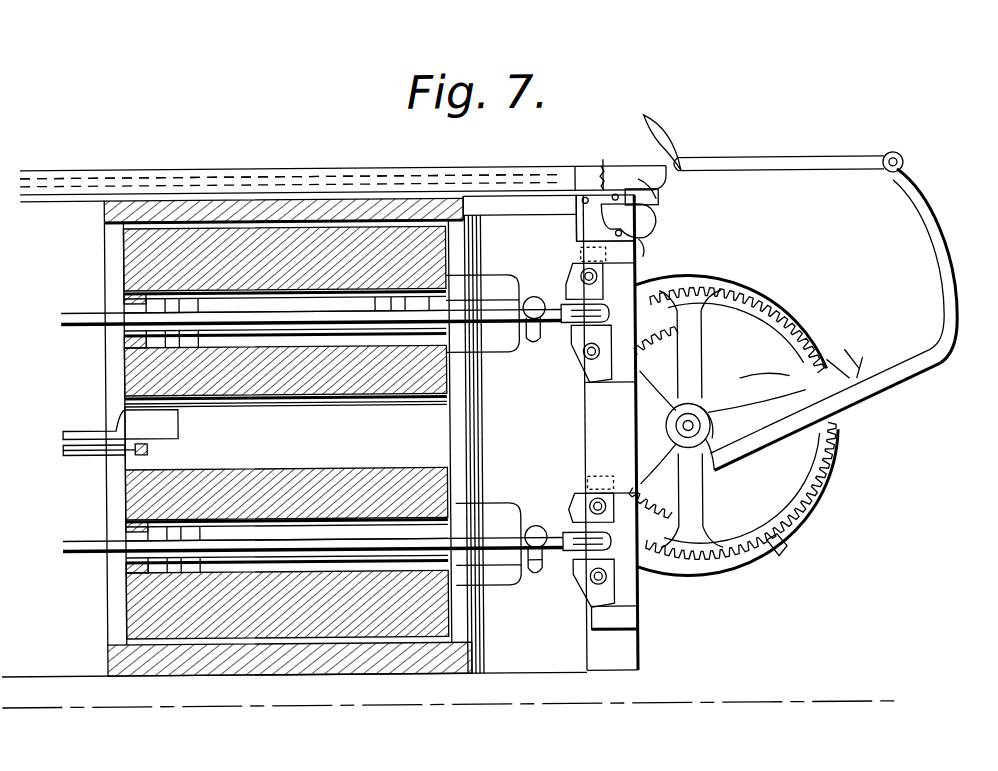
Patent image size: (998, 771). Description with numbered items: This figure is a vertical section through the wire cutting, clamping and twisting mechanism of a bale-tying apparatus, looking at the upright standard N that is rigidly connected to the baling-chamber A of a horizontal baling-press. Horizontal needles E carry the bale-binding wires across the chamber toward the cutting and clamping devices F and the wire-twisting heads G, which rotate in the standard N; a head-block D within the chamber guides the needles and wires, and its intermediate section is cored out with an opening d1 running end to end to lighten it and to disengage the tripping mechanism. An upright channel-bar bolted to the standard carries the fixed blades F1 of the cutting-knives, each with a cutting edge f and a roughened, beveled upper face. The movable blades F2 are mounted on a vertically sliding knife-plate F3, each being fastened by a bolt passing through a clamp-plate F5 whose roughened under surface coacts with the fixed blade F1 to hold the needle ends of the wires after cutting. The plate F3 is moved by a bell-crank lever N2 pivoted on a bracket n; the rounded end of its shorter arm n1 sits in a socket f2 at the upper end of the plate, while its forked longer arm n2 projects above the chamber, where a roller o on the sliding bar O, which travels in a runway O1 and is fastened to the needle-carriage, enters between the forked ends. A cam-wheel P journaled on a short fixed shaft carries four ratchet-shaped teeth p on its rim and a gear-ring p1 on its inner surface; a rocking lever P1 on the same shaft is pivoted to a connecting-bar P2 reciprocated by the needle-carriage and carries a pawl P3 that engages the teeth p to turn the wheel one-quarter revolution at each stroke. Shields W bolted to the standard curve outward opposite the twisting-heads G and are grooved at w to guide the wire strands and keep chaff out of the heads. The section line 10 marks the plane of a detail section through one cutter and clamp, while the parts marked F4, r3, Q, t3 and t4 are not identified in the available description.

The sliding rod or bar O is at (423, 167).
The runway O1 is at (221, 168).
The roller o is at (672, 130).
The wire cutting and clamping devices F is at (302, 217).
The fixed blade F1 is at (578, 262).
The movable blade F2 is at (585, 482).
The knife-plate F3 is at (610, 409).
The bearing bracket F4 is at (580, 352).
The clamp-plate F5 is at (616, 468).
The cutting edge f is at (550, 583).
The socket f2 is at (585, 152).
The upright standard N is at (495, 418).
The bell-crank lever N2 is at (672, 200).
The bracket n is at (648, 248).
The shorter arm n1 is at (672, 212).
The longer arm n2 is at (680, 160).
The cam-wheel P is at (785, 318).
The rocking lever P1 is at (937, 258).
The connecting-bar P2 is at (832, 160).
The pawl P3 is at (862, 358).
The ratchet-shaped teeth p is at (833, 345).
The gear-ring p1 is at (764, 362).
The hub r3 is at (710, 407).
The segment gear wheel Q is at (703, 498).
The wire-twisting head G is at (537, 302).
The shield W is at (483, 430).
The groove w is at (487, 523).
The needle E is at (86, 312).
The baling-chamber A is at (168, 374).
The head-block D is at (130, 397).
The opening d1 is at (223, 437).
The rod pocket t3 is at (180, 427).
The rod t4 is at (150, 447).
The section line 10 is at (605, 314).